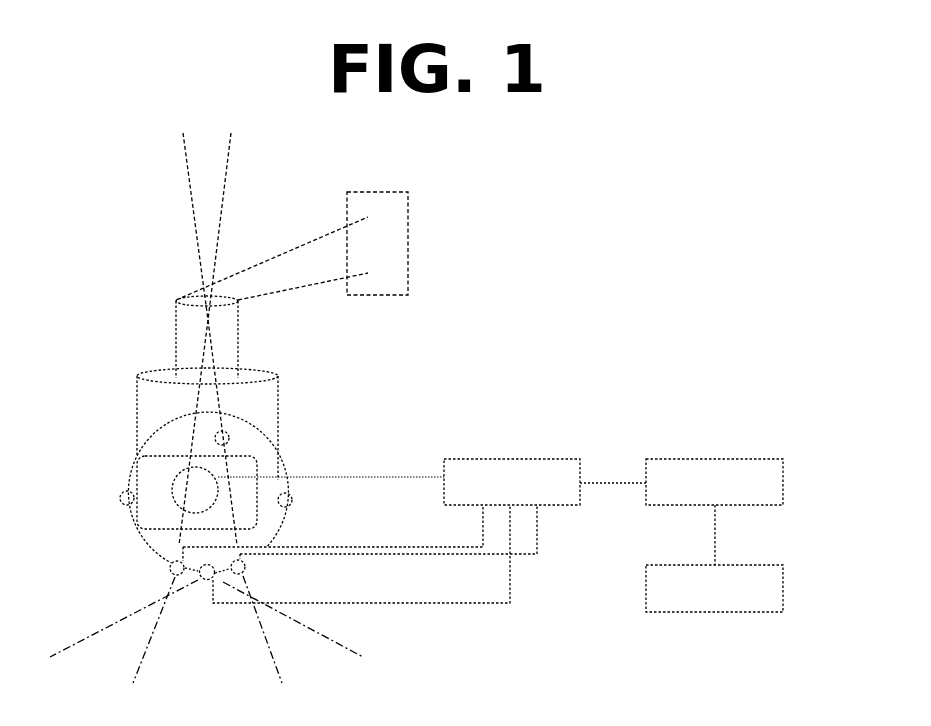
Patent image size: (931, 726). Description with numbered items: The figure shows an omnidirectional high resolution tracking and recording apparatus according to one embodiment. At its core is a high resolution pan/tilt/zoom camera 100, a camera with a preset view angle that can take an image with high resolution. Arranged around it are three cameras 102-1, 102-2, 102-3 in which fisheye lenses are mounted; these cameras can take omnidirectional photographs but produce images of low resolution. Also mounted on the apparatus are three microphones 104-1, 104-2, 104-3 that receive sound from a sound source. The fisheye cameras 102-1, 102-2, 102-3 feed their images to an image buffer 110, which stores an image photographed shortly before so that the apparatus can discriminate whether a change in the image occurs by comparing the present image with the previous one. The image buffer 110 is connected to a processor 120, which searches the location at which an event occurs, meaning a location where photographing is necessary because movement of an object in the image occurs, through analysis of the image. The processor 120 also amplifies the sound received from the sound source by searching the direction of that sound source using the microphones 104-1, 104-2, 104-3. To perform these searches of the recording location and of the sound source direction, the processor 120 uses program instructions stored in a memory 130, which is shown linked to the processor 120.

The pan/tilt/zoom camera 100 is at (173, 481).
The camera 102-1 is at (168, 563).
The camera 102-2 is at (247, 568).
The camera 102-3 is at (210, 580).
The microphone 104-1 is at (118, 498).
The microphone 104-2 is at (293, 498).
The microphone 104-3 is at (230, 432).
The image buffer 110 is at (527, 459).
The processor 120 is at (785, 480).
The memory 130 is at (785, 588).